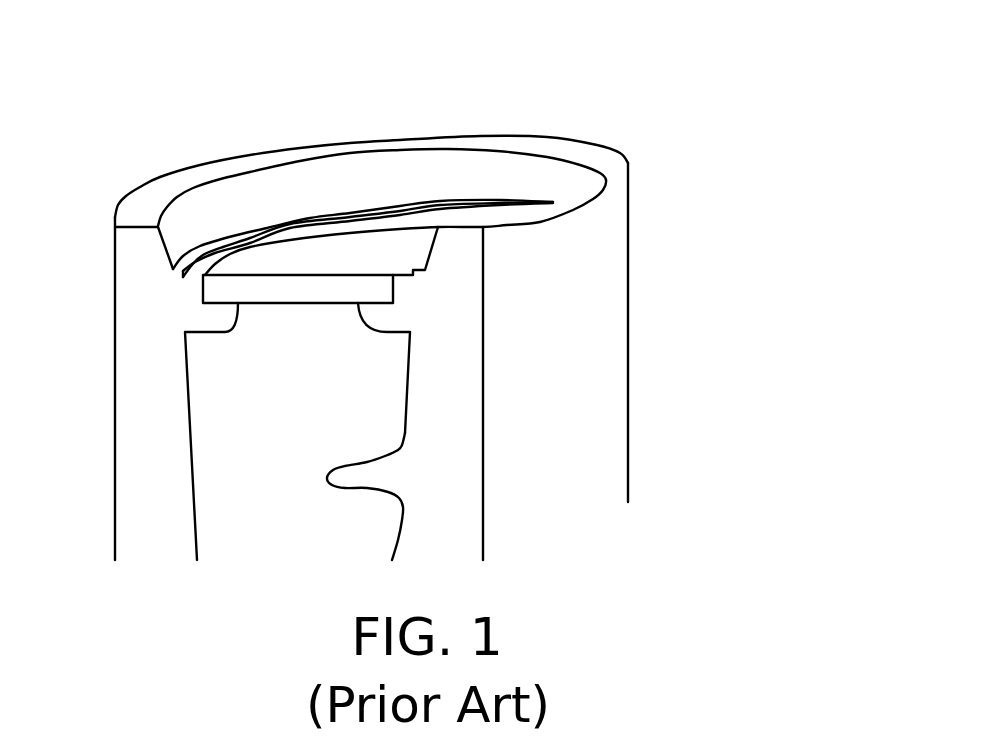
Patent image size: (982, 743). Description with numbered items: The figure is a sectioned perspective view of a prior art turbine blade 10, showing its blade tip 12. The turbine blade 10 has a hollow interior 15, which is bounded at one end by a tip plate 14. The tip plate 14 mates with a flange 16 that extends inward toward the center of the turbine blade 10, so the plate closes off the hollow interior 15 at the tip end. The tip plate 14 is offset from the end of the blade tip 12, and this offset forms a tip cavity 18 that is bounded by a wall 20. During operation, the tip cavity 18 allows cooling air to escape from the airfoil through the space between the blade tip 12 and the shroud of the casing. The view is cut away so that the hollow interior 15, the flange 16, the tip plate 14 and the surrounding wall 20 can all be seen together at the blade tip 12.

The turbine blade 10 is at (668, 314).
The blade tip 12 is at (605, 202).
The tip plate 14 is at (392, 247).
The hollow interior 15 is at (302, 403).
The flange 16 is at (265, 304).
The tip cavity 18 is at (350, 216).
The wall 20 is at (247, 191).